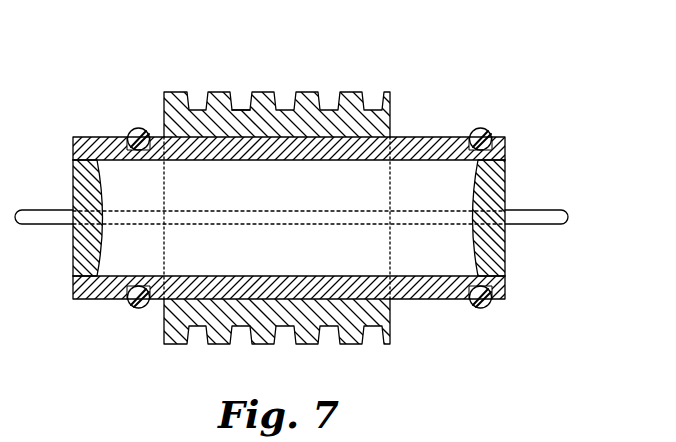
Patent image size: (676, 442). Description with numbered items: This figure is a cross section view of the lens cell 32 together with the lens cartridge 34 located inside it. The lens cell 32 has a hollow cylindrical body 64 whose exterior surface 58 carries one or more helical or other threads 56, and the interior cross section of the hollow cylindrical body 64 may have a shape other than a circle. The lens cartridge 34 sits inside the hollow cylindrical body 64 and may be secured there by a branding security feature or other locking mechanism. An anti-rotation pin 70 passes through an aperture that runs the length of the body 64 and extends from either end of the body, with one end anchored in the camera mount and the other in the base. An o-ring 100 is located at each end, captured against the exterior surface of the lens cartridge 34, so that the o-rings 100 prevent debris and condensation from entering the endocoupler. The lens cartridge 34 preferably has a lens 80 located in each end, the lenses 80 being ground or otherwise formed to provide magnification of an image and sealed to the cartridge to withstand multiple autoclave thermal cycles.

The lens cell 32 is at (309, 190).
The lens cartridge 34 is at (92, 292).
The threads 56 is at (222, 92).
The exterior surface 58 is at (242, 110).
The hollow cylindrical body 64 is at (383, 313).
The anti-rotation pin 70 is at (533, 218).
The lens 80 is at (82, 247).
The o-ring 100 is at (140, 128).